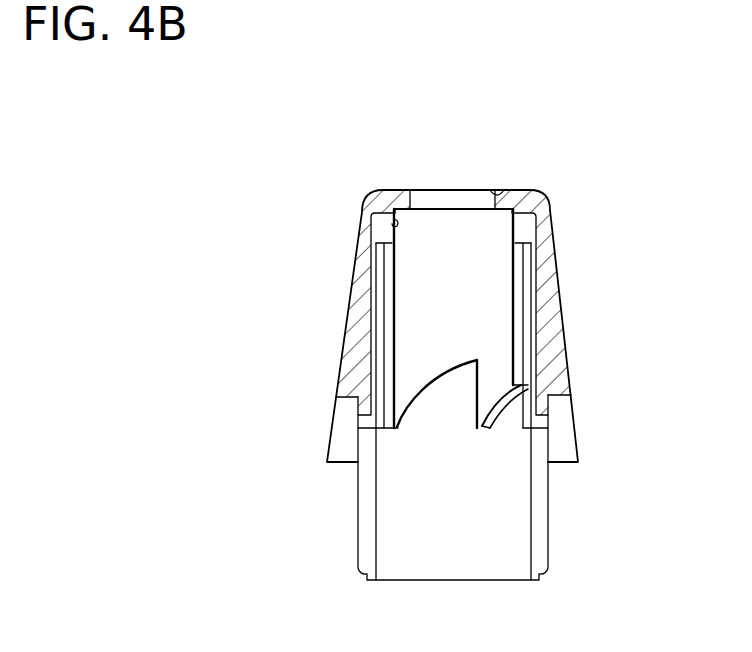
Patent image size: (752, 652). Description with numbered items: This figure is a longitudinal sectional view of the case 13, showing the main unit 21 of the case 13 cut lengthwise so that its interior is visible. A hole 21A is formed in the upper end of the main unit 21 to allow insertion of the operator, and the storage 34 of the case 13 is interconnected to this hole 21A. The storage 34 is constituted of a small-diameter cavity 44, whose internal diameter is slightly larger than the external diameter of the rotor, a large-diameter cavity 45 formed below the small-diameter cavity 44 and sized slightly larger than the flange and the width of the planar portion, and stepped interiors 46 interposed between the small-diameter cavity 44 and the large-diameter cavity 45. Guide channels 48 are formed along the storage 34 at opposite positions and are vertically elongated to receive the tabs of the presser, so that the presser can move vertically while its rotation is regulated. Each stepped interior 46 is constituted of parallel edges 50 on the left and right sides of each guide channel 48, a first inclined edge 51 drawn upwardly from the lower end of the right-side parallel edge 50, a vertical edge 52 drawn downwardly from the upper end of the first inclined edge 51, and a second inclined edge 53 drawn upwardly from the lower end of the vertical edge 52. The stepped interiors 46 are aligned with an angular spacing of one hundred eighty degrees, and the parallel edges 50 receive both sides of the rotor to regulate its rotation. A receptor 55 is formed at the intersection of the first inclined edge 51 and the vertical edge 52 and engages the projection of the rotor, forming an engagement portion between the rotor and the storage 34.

The case 13 is at (602, 161).
The main unit 21 is at (368, 210).
The hole 21A is at (496, 191).
The small-diameter cavity 44 is at (393, 224).
The guide channel 48 is at (380, 238).
The parallel edge 50 is at (385, 318).
The large-diameter cavity 45 is at (378, 531).
The receptor 55 is at (467, 371).
The first inclined edge 51 is at (423, 403).
The vertical edge 52 is at (471, 402).
The second inclined edge 53 is at (489, 418).
The stepped interior 46 is at (395, 443).
The storage 34 is at (394, 576).